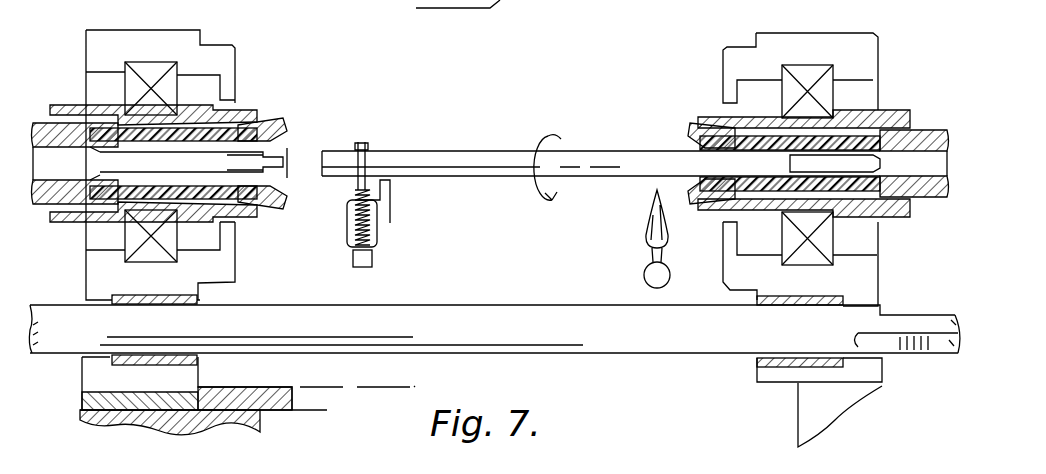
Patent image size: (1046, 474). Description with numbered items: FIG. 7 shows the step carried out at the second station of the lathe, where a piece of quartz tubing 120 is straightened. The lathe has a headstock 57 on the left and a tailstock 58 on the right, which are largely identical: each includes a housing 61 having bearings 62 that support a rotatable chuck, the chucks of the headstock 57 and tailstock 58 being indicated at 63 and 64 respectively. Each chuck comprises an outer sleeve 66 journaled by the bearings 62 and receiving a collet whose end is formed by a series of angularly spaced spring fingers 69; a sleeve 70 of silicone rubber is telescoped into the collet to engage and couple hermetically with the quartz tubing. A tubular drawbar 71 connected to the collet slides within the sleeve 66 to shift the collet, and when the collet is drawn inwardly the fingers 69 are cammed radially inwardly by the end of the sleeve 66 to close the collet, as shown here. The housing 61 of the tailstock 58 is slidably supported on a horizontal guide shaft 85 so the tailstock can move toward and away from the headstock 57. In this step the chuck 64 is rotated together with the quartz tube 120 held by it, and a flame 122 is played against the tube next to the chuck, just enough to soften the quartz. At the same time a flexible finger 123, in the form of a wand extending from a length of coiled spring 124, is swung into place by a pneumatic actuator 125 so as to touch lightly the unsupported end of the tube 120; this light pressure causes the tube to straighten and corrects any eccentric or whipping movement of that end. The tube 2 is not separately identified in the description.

The glass tube 2 is at (516, 263).
The headstock 57 is at (250, 51).
The tailstock 58 is at (717, 53).
The housing 61 is at (88, 47).
The bearings 62 is at (143, 62).
The chuck 63 is at (258, 106).
The chuck 64 is at (711, 110).
The outer sleeve 66 is at (250, 215).
The spring fingers 69 is at (272, 128).
The sleeve of silicone rubber 70 is at (198, 132).
The tubular drawbar 71 is at (58, 127).
The guide shaft 85 is at (686, 356).
The piece of quartz tubing 120 is at (626, 148).
The flame 122 is at (648, 242).
The flexible finger 123 is at (368, 147).
The coiled spring 124 is at (376, 225).
The pneumatic actuator 125 is at (372, 255).